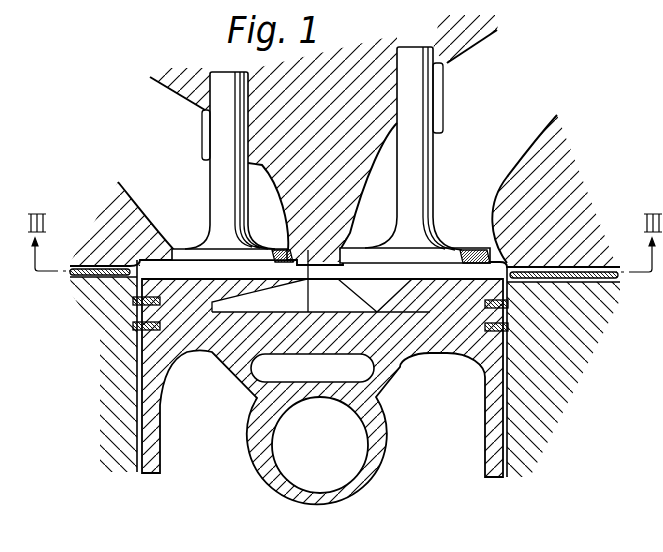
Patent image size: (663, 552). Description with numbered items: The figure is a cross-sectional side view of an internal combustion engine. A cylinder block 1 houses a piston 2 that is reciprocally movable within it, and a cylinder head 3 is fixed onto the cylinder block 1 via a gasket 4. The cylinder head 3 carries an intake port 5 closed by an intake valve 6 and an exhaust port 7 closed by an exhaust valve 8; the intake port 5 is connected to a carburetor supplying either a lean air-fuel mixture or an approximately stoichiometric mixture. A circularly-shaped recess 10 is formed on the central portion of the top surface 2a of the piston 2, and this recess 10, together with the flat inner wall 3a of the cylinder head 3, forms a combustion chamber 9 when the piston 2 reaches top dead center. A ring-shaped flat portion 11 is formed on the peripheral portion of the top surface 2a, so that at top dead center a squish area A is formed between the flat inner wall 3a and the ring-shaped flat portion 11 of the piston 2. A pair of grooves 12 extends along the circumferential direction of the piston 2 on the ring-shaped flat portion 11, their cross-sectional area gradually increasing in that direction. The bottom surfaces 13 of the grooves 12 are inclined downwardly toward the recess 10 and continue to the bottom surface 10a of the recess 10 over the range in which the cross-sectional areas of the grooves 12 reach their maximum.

The cylinder block 1 is at (523, 350).
The piston 2 is at (320, 391).
The top surface of the piston 2a is at (173, 270).
The cylinder head 3 is at (535, 207).
The inner wall of the cylinder head 3a is at (240, 356).
The gasket 4 is at (595, 278).
The intake port 5 is at (474, 136).
The intake valve 6 is at (420, 100).
The exhaust port 7 is at (151, 158).
The exhaust valve 8 is at (222, 124).
The combustion chamber 9 is at (332, 308).
The circularly-shaped recess 10 is at (233, 298).
The bottom surface of the recess 10a is at (292, 310).
The ring-shaped flat portion 11 is at (480, 250).
The grooves 12 is at (208, 280).
The bottom surfaces of the grooves 13 is at (248, 157).
The squish area A is at (147, 268).